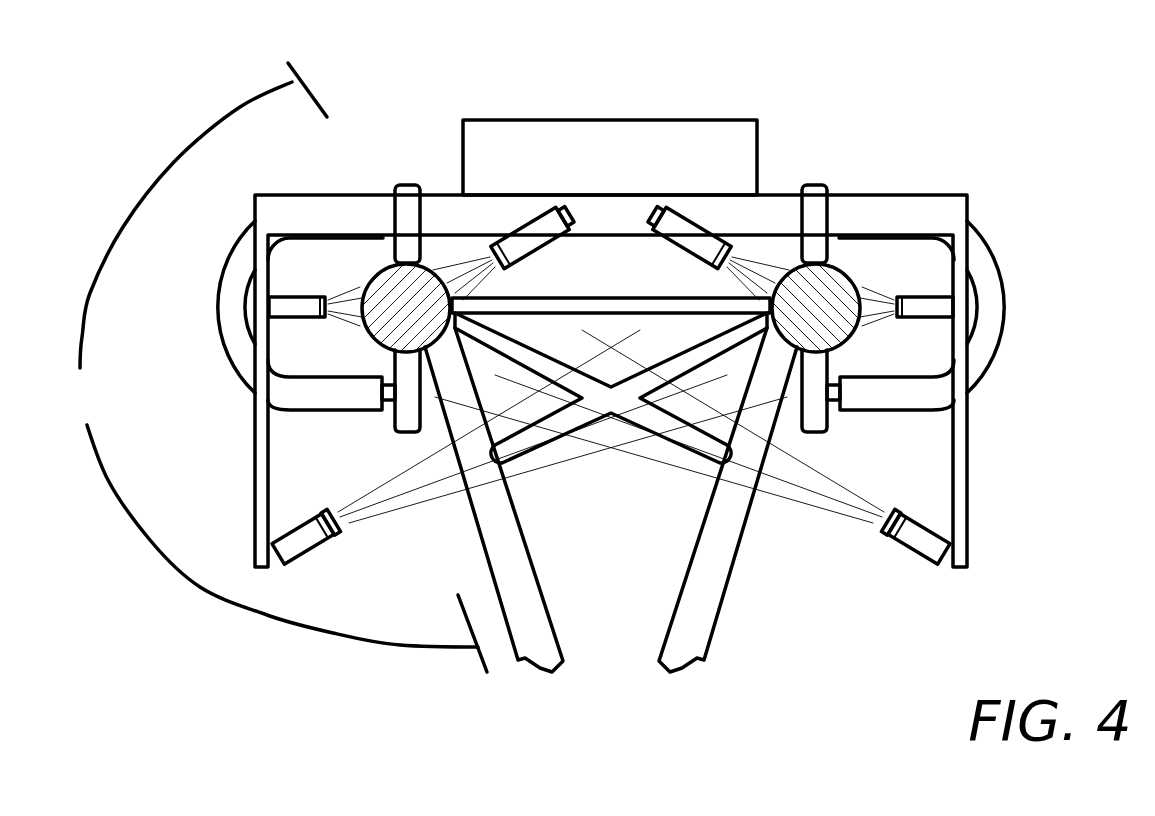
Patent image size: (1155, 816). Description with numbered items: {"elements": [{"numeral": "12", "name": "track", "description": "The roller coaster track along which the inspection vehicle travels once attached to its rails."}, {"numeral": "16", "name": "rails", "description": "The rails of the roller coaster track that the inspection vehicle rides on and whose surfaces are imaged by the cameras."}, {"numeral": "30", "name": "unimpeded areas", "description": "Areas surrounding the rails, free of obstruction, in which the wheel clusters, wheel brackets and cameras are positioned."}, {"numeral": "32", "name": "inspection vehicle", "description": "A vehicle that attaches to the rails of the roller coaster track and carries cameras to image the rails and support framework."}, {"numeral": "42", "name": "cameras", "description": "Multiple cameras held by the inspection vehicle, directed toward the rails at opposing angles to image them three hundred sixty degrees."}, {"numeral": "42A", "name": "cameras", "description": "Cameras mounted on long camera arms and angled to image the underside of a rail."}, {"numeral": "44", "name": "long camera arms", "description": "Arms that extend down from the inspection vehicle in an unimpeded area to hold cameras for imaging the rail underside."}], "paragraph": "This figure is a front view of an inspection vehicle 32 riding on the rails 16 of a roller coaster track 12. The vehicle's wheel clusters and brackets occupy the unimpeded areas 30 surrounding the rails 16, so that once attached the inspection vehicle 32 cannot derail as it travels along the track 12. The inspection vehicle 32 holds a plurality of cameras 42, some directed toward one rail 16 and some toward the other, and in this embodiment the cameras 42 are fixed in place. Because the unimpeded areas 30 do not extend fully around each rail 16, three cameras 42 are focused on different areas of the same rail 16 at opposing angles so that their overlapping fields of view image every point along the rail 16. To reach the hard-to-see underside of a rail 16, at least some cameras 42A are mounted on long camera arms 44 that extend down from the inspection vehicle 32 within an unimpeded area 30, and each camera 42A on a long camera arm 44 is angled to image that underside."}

The support structure 12 is at (712, 493).
The cross bar 16 is at (767, 313).
The rotation path 30 is at (276, 367).
The housing 32 is at (566, 112).
The light source 42 is at (715, 237).
The auxiliary light source 42A is at (288, 550).
The frame 44 is at (255, 441).